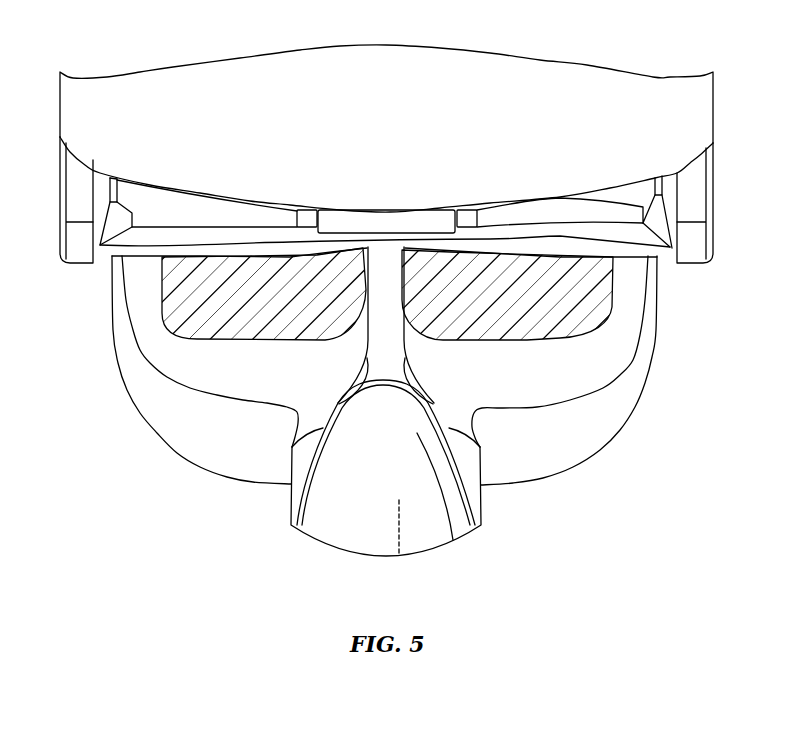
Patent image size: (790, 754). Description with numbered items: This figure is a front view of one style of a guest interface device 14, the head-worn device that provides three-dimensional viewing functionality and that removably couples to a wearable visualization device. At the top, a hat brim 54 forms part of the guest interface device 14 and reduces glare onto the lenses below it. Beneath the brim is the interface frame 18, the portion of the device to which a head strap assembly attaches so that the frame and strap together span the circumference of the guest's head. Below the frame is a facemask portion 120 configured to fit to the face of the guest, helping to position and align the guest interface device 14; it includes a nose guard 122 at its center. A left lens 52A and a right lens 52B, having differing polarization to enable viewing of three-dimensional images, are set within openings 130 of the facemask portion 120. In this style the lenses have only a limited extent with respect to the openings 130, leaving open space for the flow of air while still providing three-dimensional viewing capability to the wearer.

The guest interface device 14 is at (697, 33).
The hat brim 54 is at (714, 102).
The interface frame 18 is at (136, 201).
The left lens 52A is at (258, 340).
The right lens 52B is at (514, 340).
The openings 130 is at (303, 387).
The facemask portion 120 is at (590, 478).
The nose guard 122 is at (417, 531).